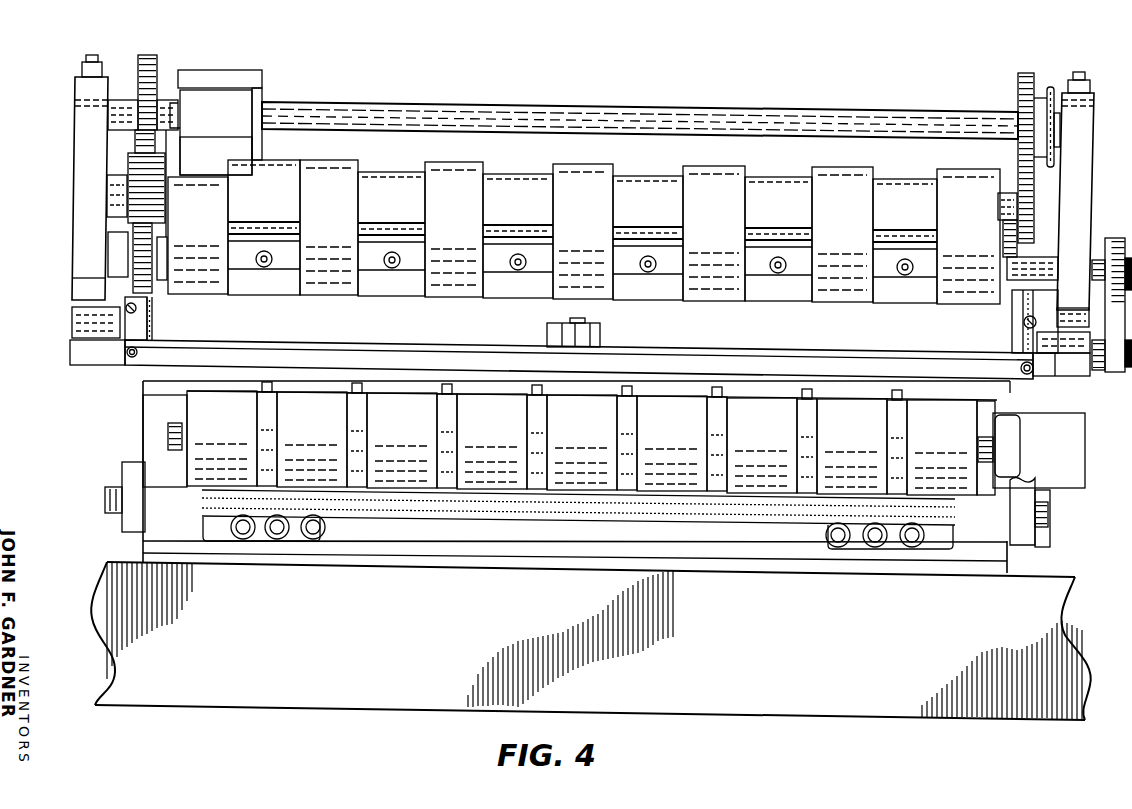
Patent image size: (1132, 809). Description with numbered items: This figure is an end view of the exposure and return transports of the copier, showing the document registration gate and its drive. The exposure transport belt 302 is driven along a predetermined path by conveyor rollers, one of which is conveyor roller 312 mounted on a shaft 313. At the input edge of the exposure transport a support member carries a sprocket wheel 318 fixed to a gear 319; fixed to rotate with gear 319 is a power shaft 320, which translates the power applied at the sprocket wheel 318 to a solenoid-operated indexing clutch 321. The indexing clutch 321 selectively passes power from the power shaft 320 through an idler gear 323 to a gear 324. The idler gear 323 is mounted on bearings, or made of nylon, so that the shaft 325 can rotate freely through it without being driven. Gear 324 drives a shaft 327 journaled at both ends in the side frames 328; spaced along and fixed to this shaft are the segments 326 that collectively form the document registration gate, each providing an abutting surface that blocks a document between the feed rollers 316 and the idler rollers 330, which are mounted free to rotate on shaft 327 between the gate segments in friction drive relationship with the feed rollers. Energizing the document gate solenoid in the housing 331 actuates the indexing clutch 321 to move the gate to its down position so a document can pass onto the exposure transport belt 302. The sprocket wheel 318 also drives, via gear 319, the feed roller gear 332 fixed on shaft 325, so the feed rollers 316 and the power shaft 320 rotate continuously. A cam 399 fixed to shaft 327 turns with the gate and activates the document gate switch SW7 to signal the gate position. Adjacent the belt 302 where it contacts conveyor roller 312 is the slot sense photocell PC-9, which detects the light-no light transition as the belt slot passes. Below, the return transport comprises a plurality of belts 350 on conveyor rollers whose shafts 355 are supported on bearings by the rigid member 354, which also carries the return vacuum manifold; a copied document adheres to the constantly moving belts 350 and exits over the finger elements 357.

The exposure transport belt 302 is at (148, 381).
The conveyor roller 312 is at (1018, 382).
The shaft 313 is at (1073, 344).
The feed roller 316 is at (584, 237).
The sprocket wheel 318 is at (1050, 87).
The gear 319 is at (1020, 74).
The power shaft 320 is at (548, 102).
The solenoid-operated indexing clutch 321 is at (244, 101).
The idler gear 323 is at (128, 175).
The gear 324 is at (150, 287).
The shaft 325 is at (110, 190).
The document registration gate segment 326 is at (385, 287).
The shaft 327 is at (1010, 278).
The side frame 328 is at (76, 152).
The idler roller 330 is at (458, 287).
The document gate solenoid housing 331 is at (243, 165).
The feed roller gear 332 is at (148, 57).
The return transport belt 350 is at (418, 400).
The rigid member 354 is at (150, 430).
The shaft 355 is at (995, 440).
The finger element 357 is at (532, 392).
The cam 399 is at (1030, 212).
The slot sense photocell PC-9 is at (605, 338).
The document gate switch SW7 is at (1131, 368).